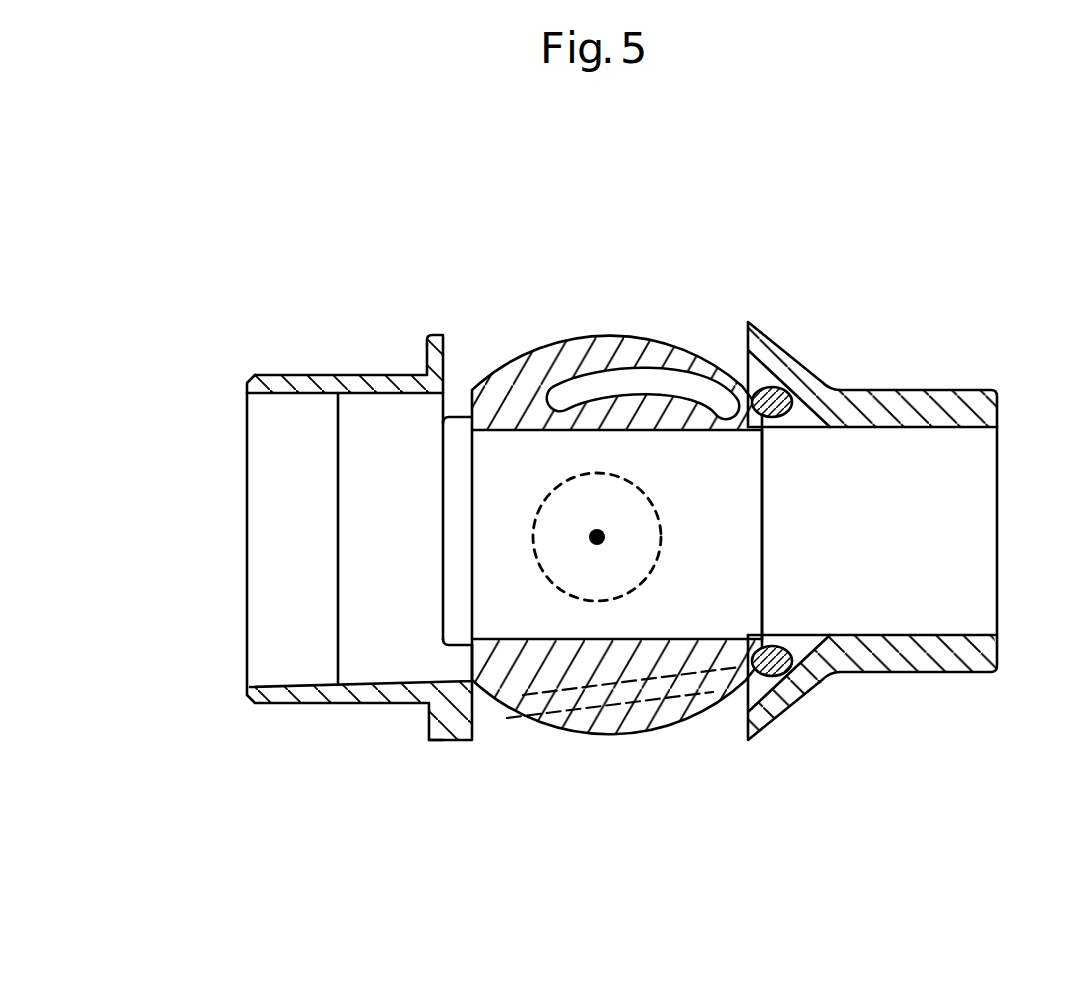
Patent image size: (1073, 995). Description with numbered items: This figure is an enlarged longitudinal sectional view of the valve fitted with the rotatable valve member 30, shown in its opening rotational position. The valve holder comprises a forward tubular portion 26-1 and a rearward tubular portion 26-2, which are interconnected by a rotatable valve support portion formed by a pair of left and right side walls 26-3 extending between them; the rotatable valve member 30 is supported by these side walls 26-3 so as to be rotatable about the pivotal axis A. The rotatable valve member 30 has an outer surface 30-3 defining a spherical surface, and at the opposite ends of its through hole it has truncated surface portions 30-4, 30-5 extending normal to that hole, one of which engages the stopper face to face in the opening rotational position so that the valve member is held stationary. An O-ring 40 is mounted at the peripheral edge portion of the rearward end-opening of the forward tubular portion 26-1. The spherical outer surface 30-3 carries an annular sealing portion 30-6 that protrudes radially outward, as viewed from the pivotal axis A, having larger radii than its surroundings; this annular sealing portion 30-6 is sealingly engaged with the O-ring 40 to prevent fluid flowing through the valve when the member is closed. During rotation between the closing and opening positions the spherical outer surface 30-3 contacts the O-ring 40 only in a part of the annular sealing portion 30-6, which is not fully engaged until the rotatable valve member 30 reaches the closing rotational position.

The forward tubular portion 26-1 is at (950, 673).
The rearward tubular portion 26-2 is at (306, 703).
The side wall 26-3 is at (457, 505).
The rotatable valve member 30 is at (624, 495).
The spherical outer surface 30-3 is at (538, 345).
The truncated surface portion 30-4 is at (468, 465).
The truncated surface portion 30-5 is at (765, 513).
The annular sealing portion 30-6 is at (673, 720).
The O-ring 40 is at (778, 385).
The pivotal axis A is at (596, 523).